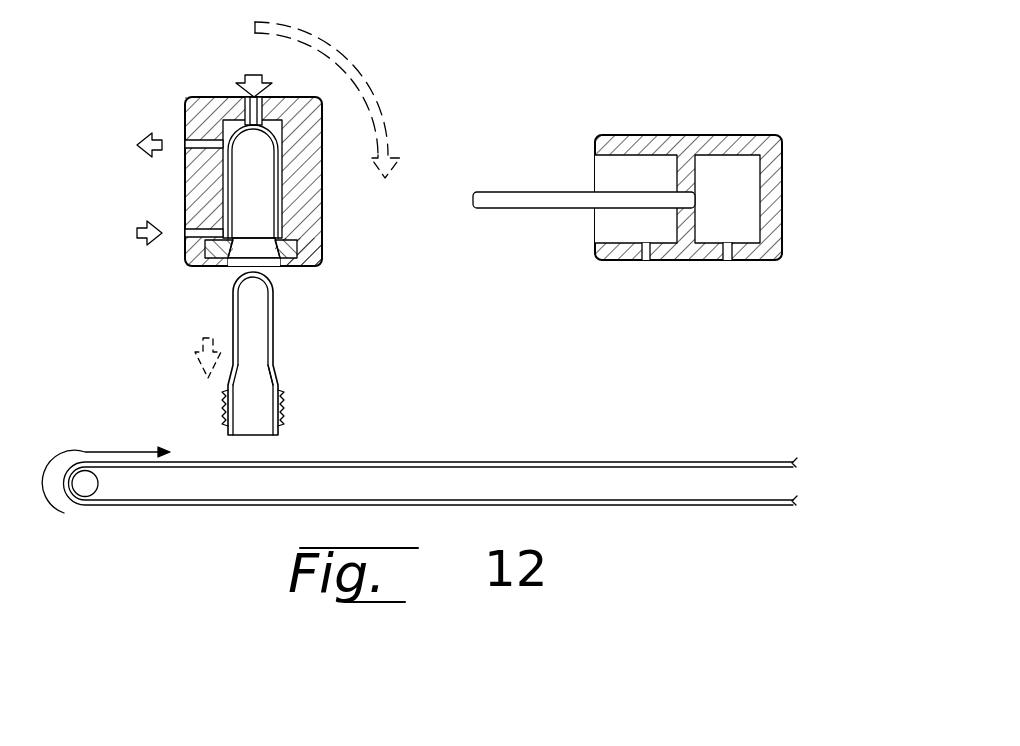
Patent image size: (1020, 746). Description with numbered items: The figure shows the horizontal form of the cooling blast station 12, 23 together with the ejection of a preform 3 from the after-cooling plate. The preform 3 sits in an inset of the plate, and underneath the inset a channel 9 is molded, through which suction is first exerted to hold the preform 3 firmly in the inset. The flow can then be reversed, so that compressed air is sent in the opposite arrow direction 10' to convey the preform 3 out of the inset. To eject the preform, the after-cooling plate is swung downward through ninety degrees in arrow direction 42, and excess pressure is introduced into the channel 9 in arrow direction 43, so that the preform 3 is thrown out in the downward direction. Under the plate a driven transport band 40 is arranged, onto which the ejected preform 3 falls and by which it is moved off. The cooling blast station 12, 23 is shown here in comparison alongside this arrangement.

The arrow direction 10' is at (229, 149).
The channel 9 is at (265, 100).
The arrow direction 42 is at (362, 68).
The preform 3 is at (273, 333).
The arrow direction 43 is at (199, 351).
The transport band 40 is at (400, 462).
The cooling blast station 12 is at (627, 158).
The cooling blast station 23 is at (670, 135).